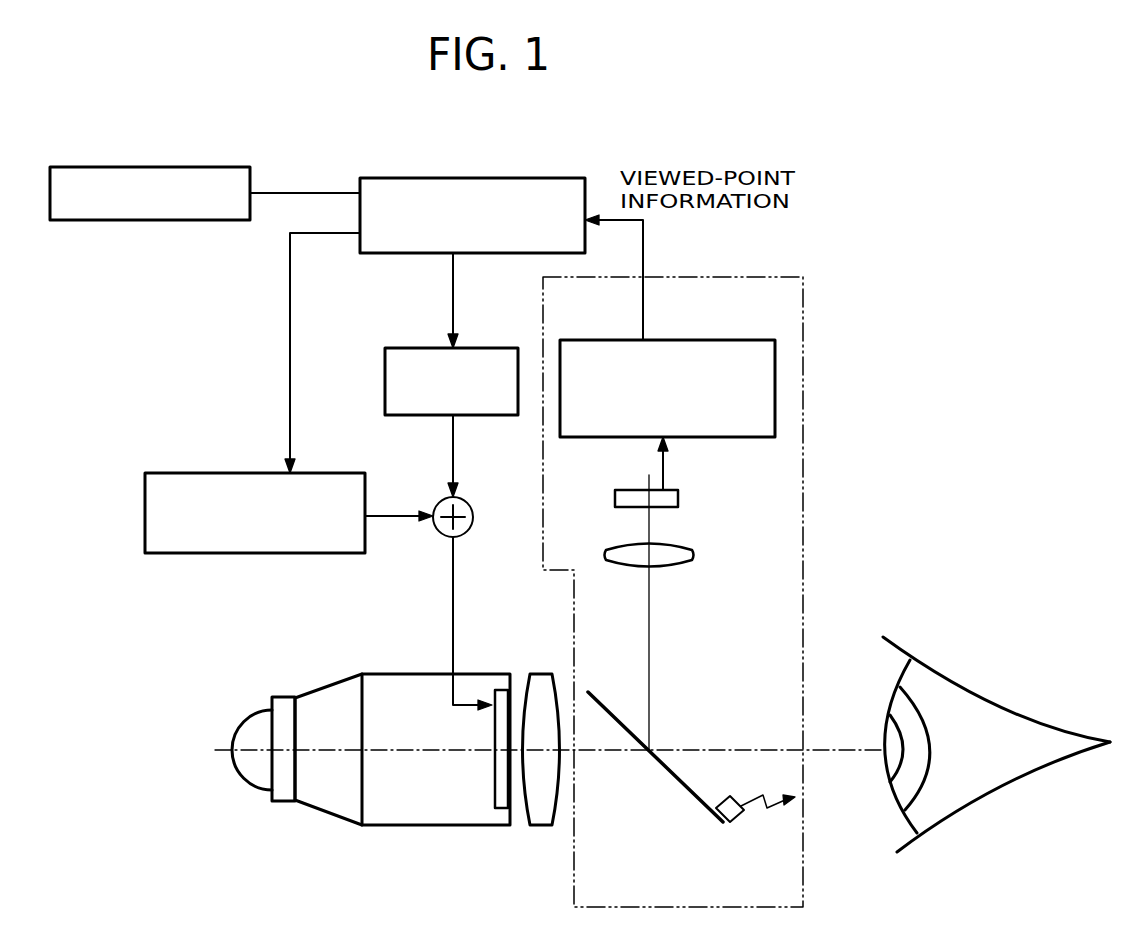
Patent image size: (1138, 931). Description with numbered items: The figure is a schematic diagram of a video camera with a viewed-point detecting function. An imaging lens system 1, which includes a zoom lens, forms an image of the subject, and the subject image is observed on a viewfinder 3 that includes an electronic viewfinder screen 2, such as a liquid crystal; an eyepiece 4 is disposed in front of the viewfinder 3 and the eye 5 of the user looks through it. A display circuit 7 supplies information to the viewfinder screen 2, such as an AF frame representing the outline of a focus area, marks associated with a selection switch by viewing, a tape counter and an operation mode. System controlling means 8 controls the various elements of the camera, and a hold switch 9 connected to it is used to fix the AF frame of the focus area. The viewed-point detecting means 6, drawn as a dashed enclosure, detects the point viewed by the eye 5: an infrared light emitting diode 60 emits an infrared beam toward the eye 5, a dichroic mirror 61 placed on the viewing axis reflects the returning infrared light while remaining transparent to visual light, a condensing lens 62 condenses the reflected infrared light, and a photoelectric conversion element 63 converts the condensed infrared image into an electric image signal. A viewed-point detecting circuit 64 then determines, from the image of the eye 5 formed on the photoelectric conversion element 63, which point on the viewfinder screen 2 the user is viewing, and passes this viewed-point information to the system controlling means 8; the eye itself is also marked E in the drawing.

The imaging lens system 1 is at (217, 473).
The electronic viewfinder screen 2 is at (500, 806).
The viewfinder 3 is at (400, 683).
The eyepiece 4 is at (538, 826).
The eye 5 is at (937, 670).
The viewed-point detecting means 6 is at (803, 400).
The display circuit 7 is at (385, 383).
The system controlling means 8 is at (492, 177).
The hold switch 9 is at (182, 165).
The infrared light emitting diode 60 is at (738, 820).
The dichroic mirror 61 is at (675, 780).
The condensing lens 62 is at (692, 555).
The photoelectric conversion element 63 is at (680, 500).
The viewed-point detecting circuit 64 is at (688, 338).
The eye E is at (885, 750).